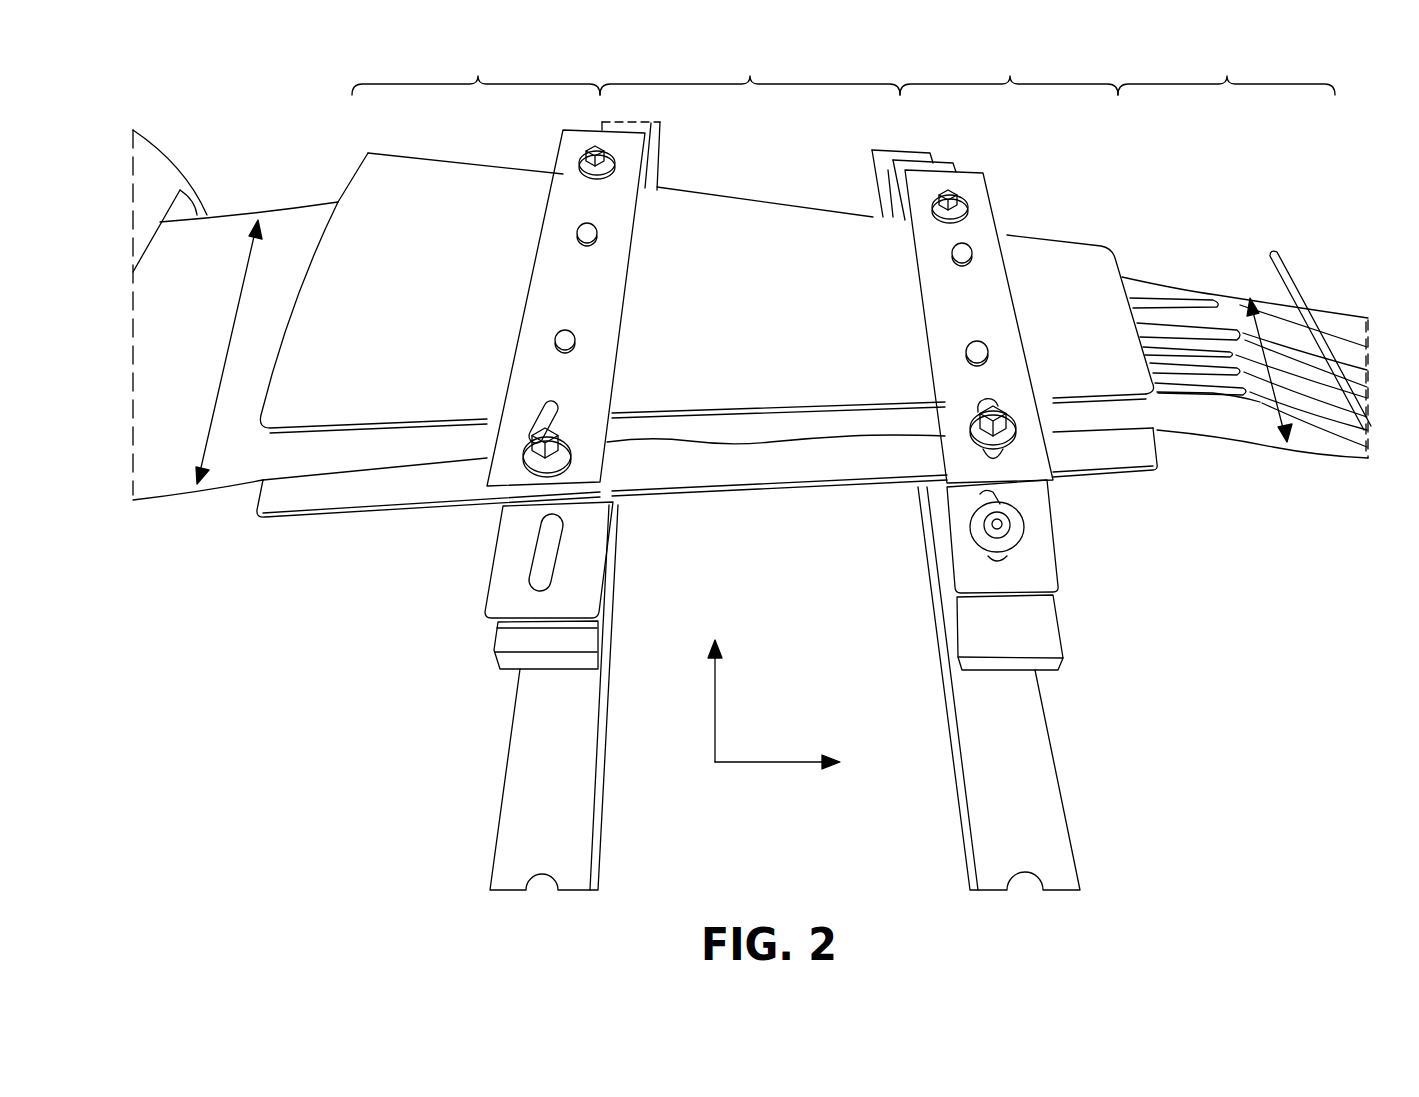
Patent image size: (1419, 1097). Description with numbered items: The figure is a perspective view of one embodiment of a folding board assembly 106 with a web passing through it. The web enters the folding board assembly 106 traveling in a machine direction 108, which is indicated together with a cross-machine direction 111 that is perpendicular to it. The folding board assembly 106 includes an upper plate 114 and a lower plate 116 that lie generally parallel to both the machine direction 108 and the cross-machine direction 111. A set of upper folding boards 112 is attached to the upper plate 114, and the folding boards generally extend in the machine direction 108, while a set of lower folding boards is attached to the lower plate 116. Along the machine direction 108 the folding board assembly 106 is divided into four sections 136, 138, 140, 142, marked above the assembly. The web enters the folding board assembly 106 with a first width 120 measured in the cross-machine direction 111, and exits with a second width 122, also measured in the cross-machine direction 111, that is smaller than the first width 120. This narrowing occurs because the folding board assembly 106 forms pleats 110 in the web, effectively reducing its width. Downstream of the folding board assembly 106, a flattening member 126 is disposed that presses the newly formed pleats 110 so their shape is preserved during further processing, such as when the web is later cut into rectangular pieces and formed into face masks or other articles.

The folding board assembly 106 is at (317, 117).
The machine direction 108 is at (807, 762).
The pleats 110 is at (1268, 305).
The cross-machine direction 111 is at (720, 679).
The upper folding boards 112 is at (1222, 392).
The upper plate 114 is at (795, 308).
The lower plate 116 is at (1132, 457).
The first width 120 is at (228, 346).
The second width 122 is at (1306, 318).
The flattening member 126 is at (1294, 278).
The first section 136 is at (476, 67).
The second section 138 is at (750, 67).
The third section 140 is at (1009, 67).
The fourth section 142 is at (1226, 67).